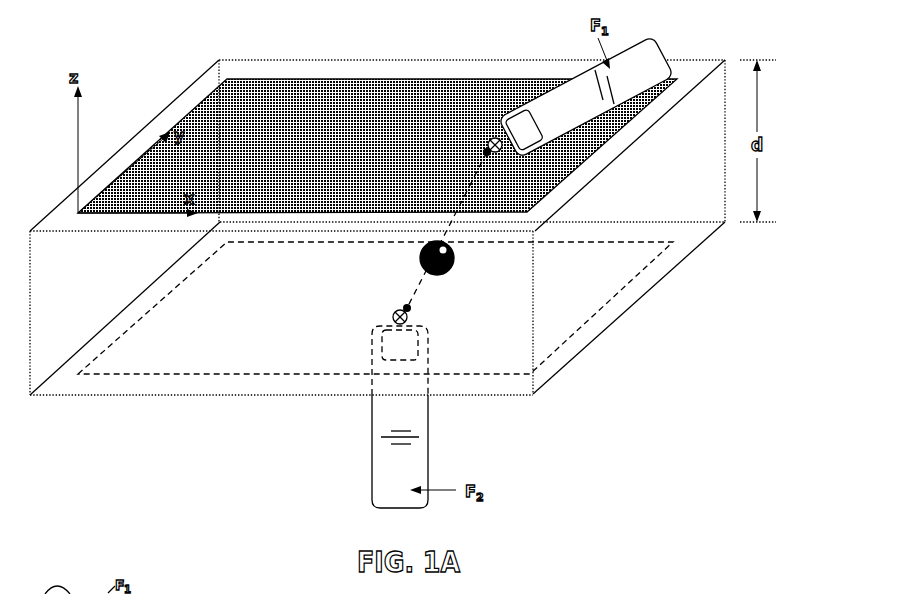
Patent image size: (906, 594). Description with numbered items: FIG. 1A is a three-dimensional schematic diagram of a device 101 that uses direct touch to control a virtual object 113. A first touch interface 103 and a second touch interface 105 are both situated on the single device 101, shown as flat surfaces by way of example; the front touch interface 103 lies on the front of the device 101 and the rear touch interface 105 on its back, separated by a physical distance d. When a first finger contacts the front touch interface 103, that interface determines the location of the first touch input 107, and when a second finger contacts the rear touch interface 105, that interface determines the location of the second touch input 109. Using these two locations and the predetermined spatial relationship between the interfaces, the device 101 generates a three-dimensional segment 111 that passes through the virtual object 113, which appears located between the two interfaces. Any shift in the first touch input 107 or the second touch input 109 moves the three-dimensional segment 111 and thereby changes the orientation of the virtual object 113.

The device 101 is at (725, 60).
The first touch interface 103 is at (305, 79).
The second touch interface 105 is at (212, 375).
The first touch input 107 is at (487, 146).
The second touch input 109 is at (392, 317).
The three-dimensional segment 111 is at (466, 185).
The virtual object 113 is at (448, 272).